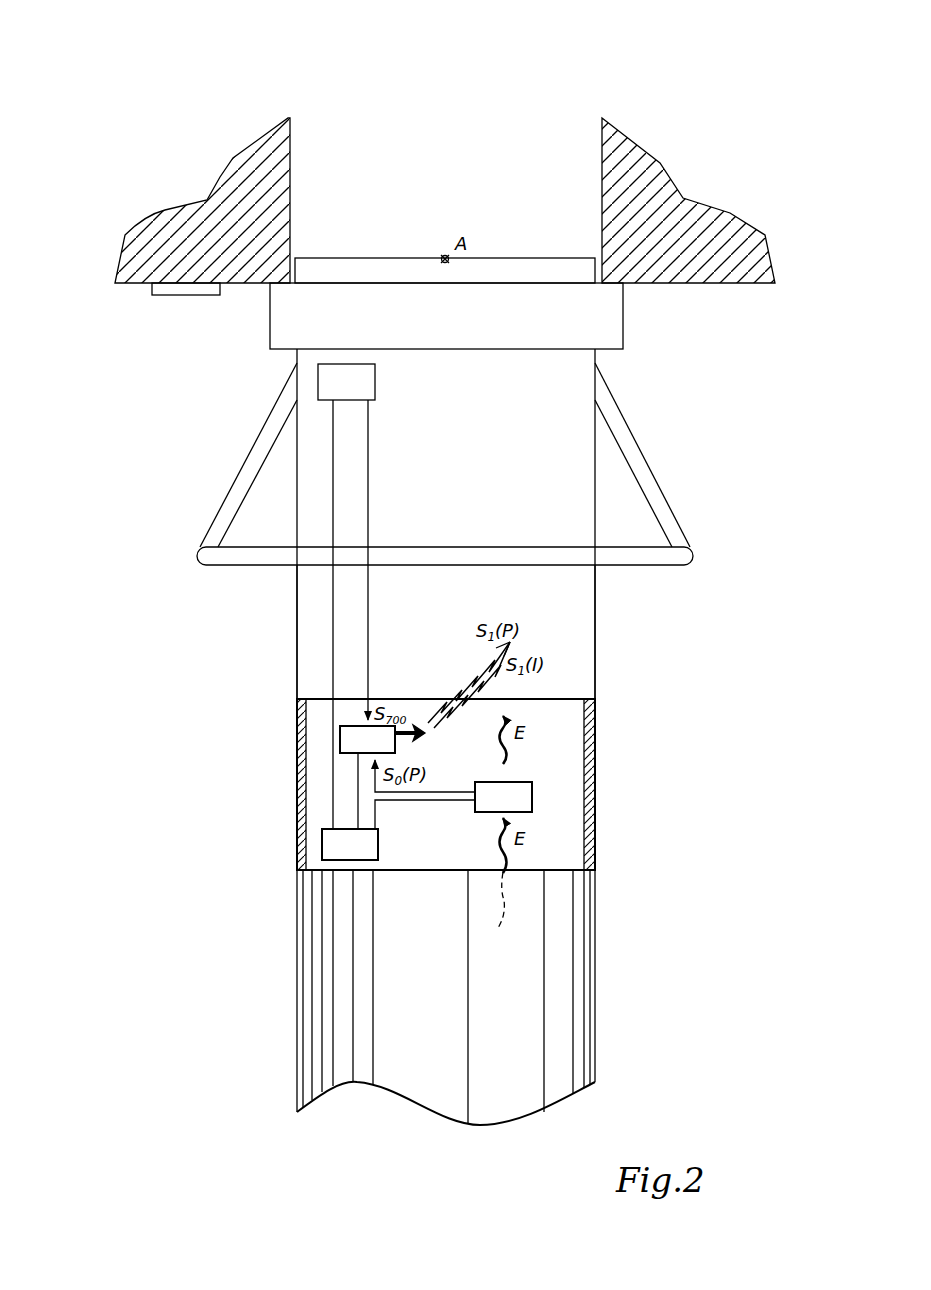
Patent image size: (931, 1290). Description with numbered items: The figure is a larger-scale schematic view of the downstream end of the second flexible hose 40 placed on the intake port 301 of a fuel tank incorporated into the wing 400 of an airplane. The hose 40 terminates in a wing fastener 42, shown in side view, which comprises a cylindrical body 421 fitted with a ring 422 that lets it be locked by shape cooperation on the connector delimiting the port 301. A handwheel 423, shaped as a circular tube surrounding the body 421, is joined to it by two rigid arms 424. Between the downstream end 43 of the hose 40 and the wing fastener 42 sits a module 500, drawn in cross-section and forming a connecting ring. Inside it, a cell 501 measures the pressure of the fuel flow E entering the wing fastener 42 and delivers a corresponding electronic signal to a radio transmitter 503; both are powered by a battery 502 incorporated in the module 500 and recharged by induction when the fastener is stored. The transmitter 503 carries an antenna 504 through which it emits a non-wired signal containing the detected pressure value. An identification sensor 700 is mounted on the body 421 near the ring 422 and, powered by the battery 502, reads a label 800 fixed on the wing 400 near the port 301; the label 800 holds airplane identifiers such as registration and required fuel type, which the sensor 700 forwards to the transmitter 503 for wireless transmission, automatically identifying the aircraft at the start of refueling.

The intake port 301 is at (373, 140).
The wing 400 is at (165, 228).
The label 800 is at (190, 296).
The ring 422 is at (592, 322).
The wing fastener 42 is at (521, 524).
The cylindrical body 421 is at (316, 681).
The rigid arms 424 is at (238, 497).
The handwheel 423 is at (267, 555).
The identification sensor 700 is at (346, 596).
The module 500 is at (510, 784).
The radio transmitter 503 is at (367, 739).
The battery 502 is at (398, 806).
The cell 501 is at (503, 797).
The antenna 504 is at (400, 740).
The downstream end 43 is at (595, 858).
The second flexible hose 40 is at (505, 997).